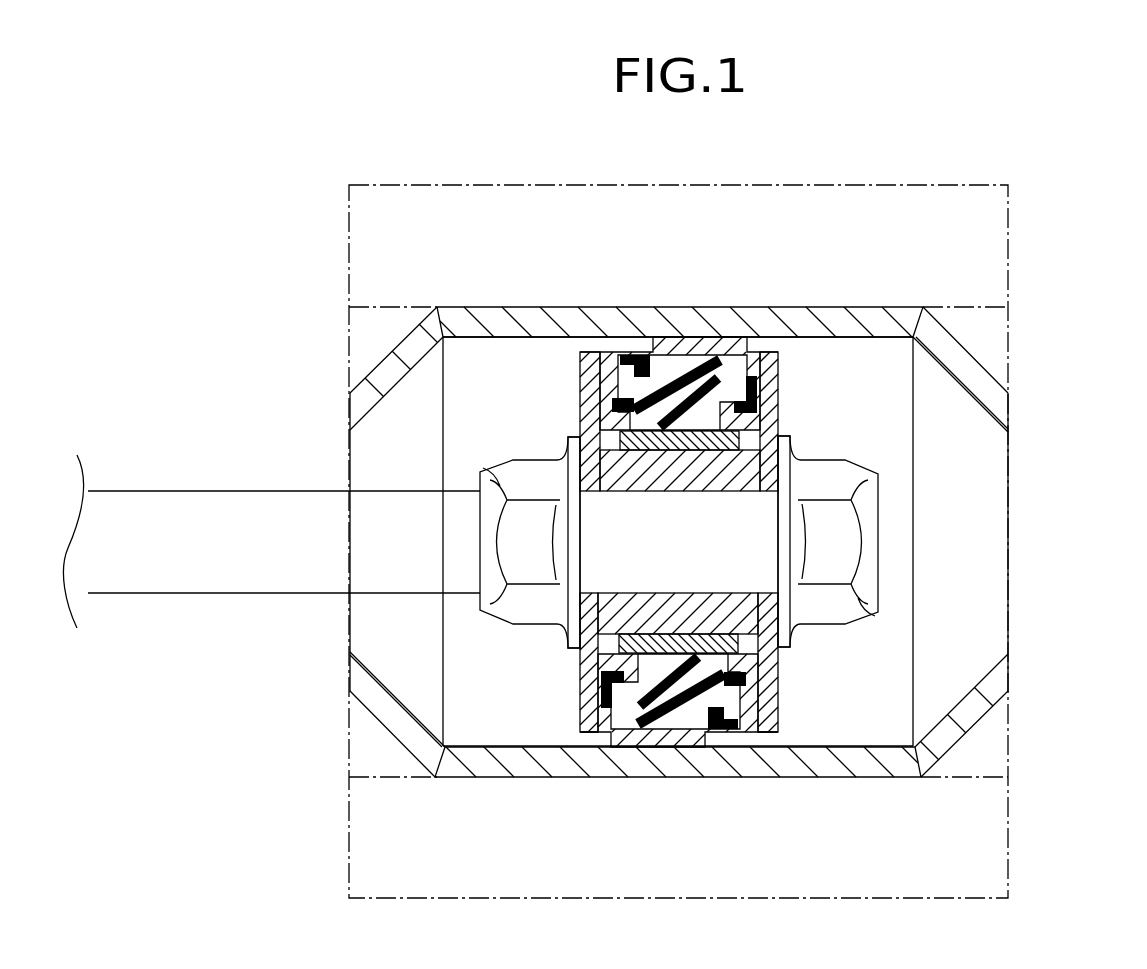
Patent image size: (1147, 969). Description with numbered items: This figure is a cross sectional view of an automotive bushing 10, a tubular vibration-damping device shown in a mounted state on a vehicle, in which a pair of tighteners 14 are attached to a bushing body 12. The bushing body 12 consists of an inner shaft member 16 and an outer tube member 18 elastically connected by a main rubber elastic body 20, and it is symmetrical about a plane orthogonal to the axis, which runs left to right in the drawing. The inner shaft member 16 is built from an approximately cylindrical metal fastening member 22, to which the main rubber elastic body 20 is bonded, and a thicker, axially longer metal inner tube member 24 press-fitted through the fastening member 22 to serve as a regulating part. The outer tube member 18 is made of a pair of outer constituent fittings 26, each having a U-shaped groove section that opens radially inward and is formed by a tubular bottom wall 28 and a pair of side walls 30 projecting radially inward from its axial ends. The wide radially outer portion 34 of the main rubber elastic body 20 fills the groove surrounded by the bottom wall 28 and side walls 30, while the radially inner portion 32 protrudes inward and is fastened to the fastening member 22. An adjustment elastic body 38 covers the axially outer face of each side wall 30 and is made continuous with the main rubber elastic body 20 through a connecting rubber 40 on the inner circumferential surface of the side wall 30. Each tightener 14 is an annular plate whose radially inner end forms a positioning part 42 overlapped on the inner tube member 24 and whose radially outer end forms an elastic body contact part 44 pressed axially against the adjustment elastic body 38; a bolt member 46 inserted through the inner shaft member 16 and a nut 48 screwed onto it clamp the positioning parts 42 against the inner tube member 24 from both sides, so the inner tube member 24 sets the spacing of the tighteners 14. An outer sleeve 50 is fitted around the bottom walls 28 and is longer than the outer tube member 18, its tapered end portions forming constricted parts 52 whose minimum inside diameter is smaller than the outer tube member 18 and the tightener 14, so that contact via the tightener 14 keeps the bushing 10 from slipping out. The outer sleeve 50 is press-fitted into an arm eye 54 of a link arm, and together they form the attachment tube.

The bushing 10 is at (1052, 358).
The bushing body 12 is at (760, 746).
The tightener 14 is at (578, 706).
The inner shaft member 16 is at (758, 425).
The outer tube member 18 is at (750, 355).
The main rubber elastic body 20 is at (652, 352).
The fastening member 22 is at (657, 432).
The inner tube member 24 is at (720, 476).
The outer constituent fitting 26 is at (713, 334).
The bottom wall 28 is at (681, 356).
The side wall 30 is at (625, 373).
The radially inner portion 32 is at (665, 419).
The radially outer portion 34 is at (677, 382).
The adjustment elastic body 38 is at (606, 362).
The connecting rubber 40 is at (628, 680).
The positioning part 42 is at (582, 470).
The elastic body contact part 44 is at (590, 712).
The bolt member 46 is at (840, 537).
The nut 48 is at (522, 544).
The outer sleeve 50 is at (868, 303).
The constricted part 52 is at (408, 357).
The arm eye 54 is at (456, 210).